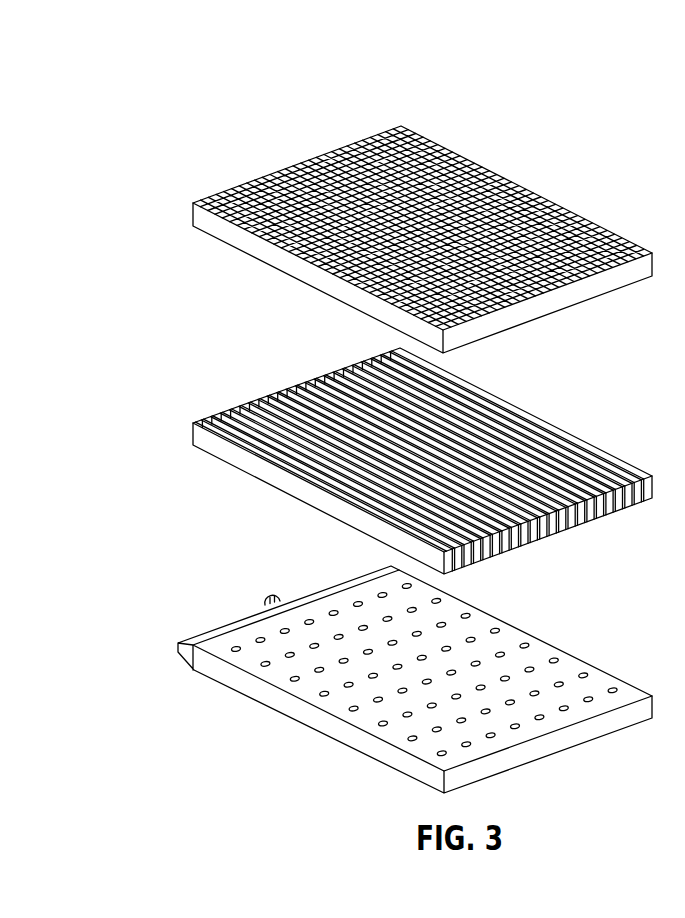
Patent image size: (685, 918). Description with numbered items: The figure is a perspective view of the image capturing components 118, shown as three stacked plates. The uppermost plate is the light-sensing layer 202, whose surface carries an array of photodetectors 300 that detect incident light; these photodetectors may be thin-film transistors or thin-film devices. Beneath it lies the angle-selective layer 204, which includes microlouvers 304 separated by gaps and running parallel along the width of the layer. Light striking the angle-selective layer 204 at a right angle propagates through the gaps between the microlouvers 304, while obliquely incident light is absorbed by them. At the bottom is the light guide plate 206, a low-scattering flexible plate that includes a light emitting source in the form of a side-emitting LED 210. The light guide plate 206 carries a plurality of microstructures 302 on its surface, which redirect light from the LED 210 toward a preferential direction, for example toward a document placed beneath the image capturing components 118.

The image capturing components 118 is at (60, 96).
The light-sensing layer 202 is at (198, 180).
The angle-selective layer 204 is at (196, 402).
The light guide plate 206 is at (198, 604).
The side-emitting LED 210 is at (265, 594).
The array of photodetectors 300 is at (353, 140).
The microstructures 302 is at (577, 670).
The microlouvers 304 is at (443, 540).